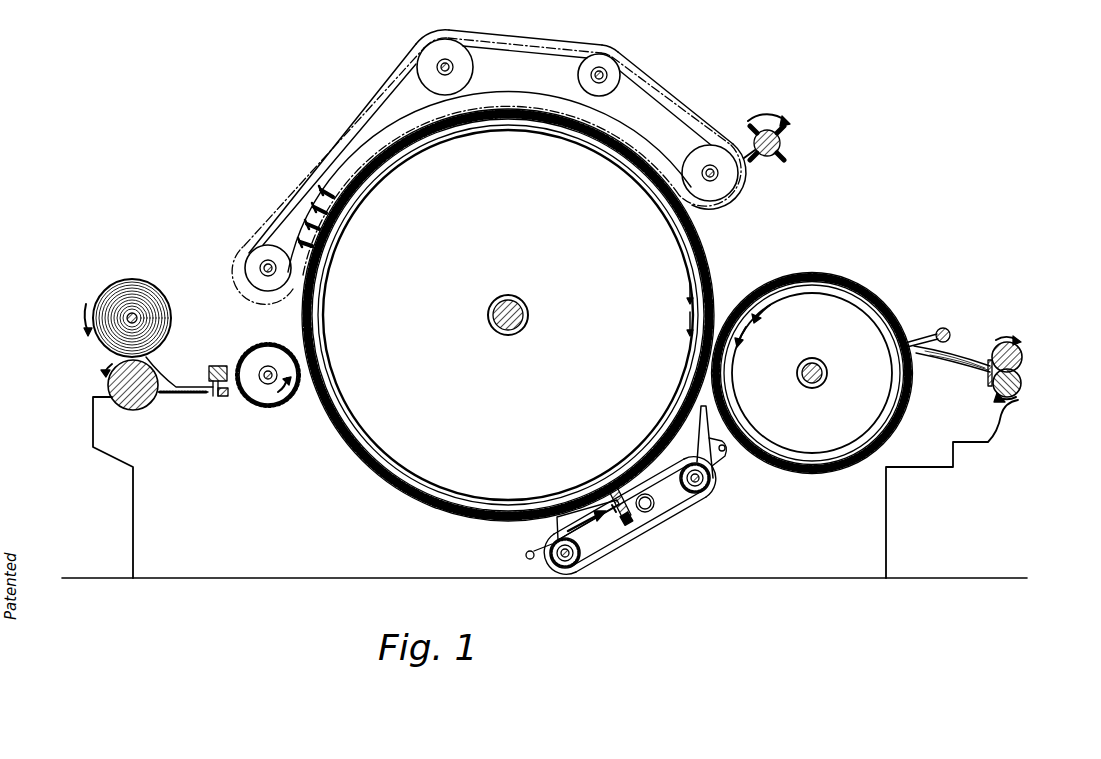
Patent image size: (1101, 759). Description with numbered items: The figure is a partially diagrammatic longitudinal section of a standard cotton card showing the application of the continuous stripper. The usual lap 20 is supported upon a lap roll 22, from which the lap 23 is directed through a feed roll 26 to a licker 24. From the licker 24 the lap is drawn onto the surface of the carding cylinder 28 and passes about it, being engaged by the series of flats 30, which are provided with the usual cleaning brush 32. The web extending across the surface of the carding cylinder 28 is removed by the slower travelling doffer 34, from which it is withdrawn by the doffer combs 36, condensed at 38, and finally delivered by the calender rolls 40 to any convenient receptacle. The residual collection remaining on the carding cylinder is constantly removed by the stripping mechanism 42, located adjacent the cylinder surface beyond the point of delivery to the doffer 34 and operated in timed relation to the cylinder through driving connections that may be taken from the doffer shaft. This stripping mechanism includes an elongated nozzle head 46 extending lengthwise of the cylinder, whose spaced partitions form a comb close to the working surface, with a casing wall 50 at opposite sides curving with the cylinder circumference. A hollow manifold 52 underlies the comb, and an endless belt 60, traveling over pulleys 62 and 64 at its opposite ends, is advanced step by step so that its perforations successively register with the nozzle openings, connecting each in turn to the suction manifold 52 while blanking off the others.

The lap 20 is at (93, 300).
The lap roll 22 is at (116, 398).
The lap 23 is at (172, 382).
The licker 24 is at (287, 412).
The feed roll 26 is at (216, 366).
The carding cylinder 28 is at (362, 465).
The flats 30 is at (305, 208).
The cleaning brush 32 is at (790, 120).
The doffer 34 is at (822, 474).
The doffer combs 36 is at (912, 333).
The condensing point 38 is at (992, 385).
The calender rolls 40 is at (1022, 378).
The stripping mechanism 42 is at (556, 530).
The nozzle head 46 is at (610, 518).
The casing wall 50 is at (674, 438).
The manifold 52 is at (612, 528).
The belt 60 is at (656, 505).
The pulley 62 is at (548, 556).
The pulley 64 is at (712, 480).